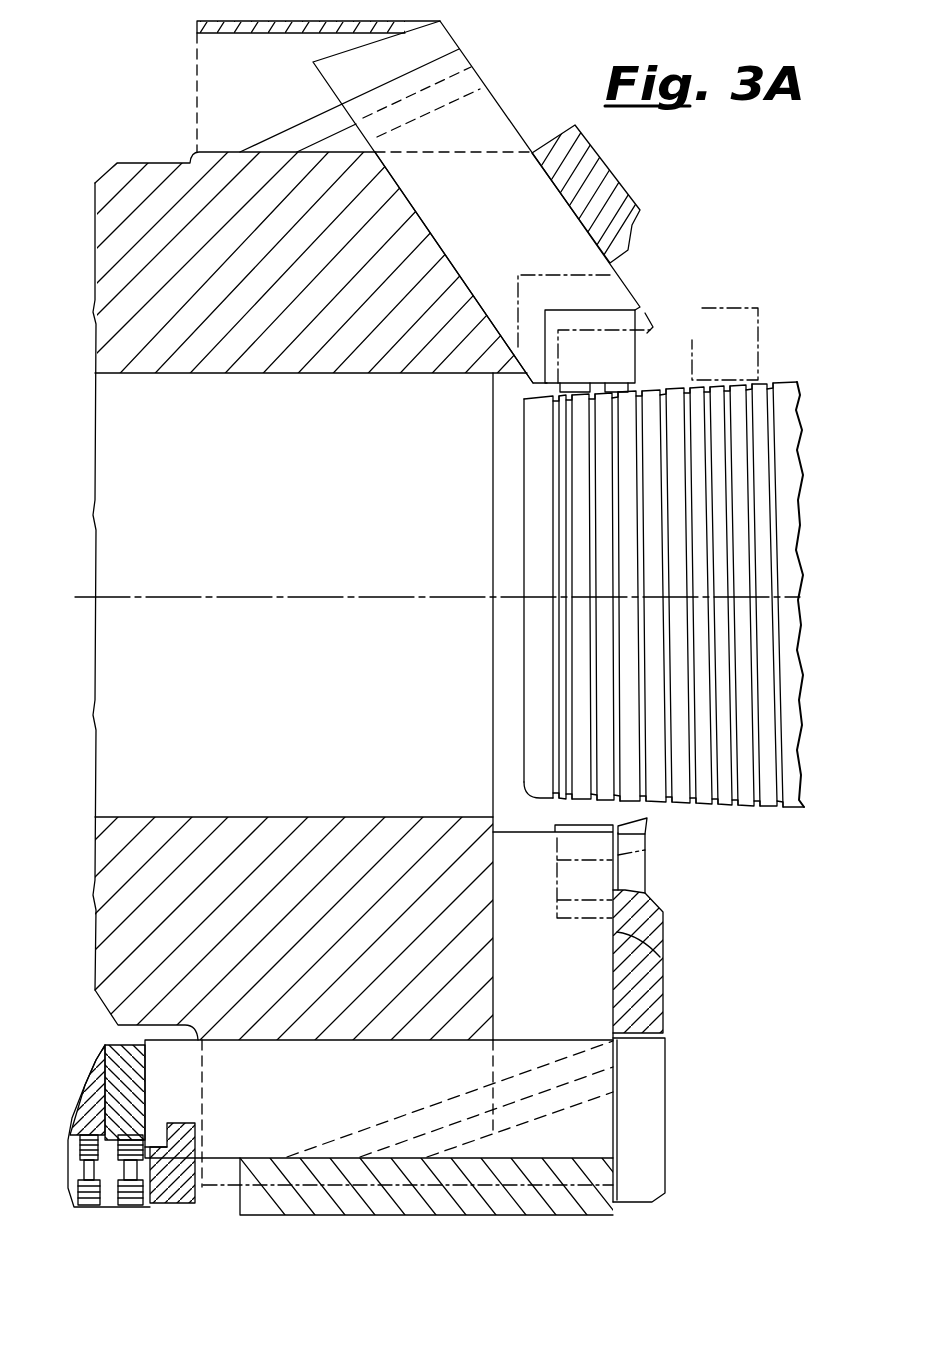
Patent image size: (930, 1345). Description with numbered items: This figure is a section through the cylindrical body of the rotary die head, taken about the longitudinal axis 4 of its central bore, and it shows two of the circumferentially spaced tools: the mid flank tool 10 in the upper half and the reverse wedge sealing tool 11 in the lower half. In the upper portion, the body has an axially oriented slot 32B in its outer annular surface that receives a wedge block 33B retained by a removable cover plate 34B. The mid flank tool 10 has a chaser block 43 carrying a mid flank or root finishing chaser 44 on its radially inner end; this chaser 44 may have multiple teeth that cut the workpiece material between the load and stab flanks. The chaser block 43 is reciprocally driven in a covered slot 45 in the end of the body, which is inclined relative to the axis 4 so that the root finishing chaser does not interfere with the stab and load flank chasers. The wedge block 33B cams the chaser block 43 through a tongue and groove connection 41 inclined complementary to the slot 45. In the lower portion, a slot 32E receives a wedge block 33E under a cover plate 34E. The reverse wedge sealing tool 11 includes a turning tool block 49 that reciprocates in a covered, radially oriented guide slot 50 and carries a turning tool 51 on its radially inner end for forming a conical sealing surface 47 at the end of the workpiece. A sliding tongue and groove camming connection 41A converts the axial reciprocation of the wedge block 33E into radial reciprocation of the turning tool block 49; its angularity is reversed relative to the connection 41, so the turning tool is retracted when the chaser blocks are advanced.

The longitudinal axis 4 is at (393, 597).
The mid flank tool 10 is at (632, 275).
The reverse wedge sealing tool 11 is at (658, 866).
The slot 32B is at (230, 152).
The slot 32E is at (268, 1040).
The wedge block 33B is at (277, 105).
The wedge block 33E is at (318, 1107).
The cover plate 34B is at (199, 33).
The cover plate 34E is at (280, 1172).
The tongue and groove connection 41 is at (434, 90).
The tongue and groove camming connection 41A is at (482, 1104).
The chaser block 43 is at (540, 226).
The mid flank chaser 44 is at (583, 383).
The covered slot 45 is at (408, 205).
The conical sealing surface 47 is at (535, 792).
The turning tool block 49 is at (573, 982).
The guide slot 50 is at (493, 935).
The turning tool 51 is at (648, 825).